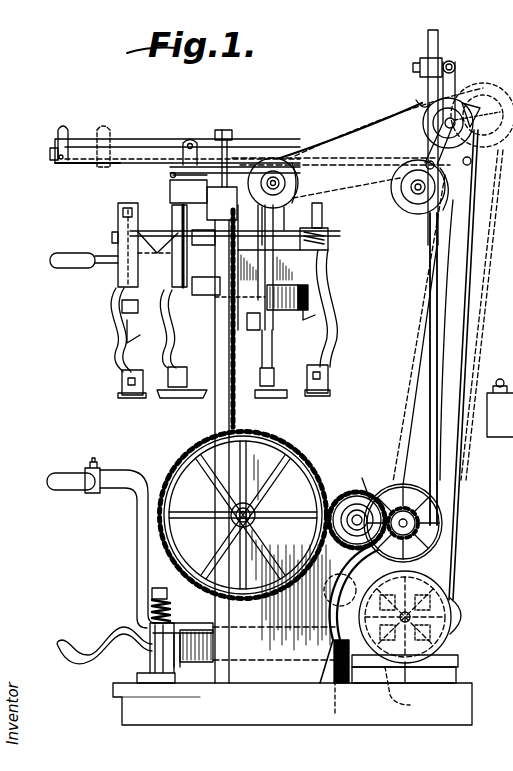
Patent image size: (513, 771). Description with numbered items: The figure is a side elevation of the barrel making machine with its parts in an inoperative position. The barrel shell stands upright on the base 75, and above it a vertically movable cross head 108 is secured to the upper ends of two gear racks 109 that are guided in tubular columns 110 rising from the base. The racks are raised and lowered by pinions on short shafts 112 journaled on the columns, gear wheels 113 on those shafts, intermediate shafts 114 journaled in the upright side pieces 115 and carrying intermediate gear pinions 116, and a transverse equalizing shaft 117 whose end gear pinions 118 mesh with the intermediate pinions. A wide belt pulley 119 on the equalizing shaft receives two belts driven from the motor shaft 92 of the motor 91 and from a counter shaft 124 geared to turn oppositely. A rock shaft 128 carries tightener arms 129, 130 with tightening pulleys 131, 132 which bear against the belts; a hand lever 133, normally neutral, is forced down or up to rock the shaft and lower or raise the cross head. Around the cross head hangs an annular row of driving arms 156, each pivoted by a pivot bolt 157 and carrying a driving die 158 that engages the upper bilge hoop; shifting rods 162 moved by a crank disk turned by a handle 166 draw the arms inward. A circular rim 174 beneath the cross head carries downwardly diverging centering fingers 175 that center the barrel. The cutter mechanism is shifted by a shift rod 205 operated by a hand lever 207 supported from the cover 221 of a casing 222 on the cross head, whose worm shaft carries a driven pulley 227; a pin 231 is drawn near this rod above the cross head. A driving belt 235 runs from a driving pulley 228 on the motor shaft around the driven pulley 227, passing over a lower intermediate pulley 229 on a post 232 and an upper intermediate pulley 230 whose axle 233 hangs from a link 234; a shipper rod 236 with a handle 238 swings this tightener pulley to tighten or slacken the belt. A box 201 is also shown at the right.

The base 75 is at (292, 704).
The motor 91 is at (452, 627).
The motor shaft 92 is at (407, 670).
The cross head 108 is at (330, 247).
The gear racks 109 is at (228, 355).
The tubular columns 110 is at (255, 515).
The short shafts 112 is at (258, 510).
The gear wheels 113 is at (315, 470).
The intermediate shafts 114 is at (372, 483).
The side pieces 115 is at (243, 515).
The intermediate gear pinions 116 is at (340, 492).
The equalizing shaft 117 is at (435, 523).
The gear pinions 118 is at (445, 512).
The wide belt pulley 119 is at (457, 480).
The counter shaft 124 is at (380, 678).
The rock shaft 128 is at (404, 694).
The tightener arm 129 is at (450, 652).
The tightener arm 130 is at (318, 673).
The tightening pulley 131 is at (462, 608).
The tightening pulley 132 is at (330, 595).
The hand lever 133 is at (135, 512).
The driving arms 156 is at (108, 333).
The pivot bolt 157 is at (324, 214).
The driving die 158 is at (133, 398).
The shifting rod 162 is at (152, 238).
The handle 166 is at (70, 263).
The circular rim 174 is at (215, 267).
The centering fingers 175 is at (287, 364).
The box 201 is at (500, 408).
The shift rod 205 is at (224, 130).
The hand lever 207 is at (150, 150).
The cover 221 is at (168, 175).
The casing 222 is at (170, 190).
The driven pulley 227 is at (285, 171).
The lower intermediate pulley 229 is at (413, 205).
The upper intermediate pulley 230 is at (428, 118).
The pin 231 is at (229, 158).
The post 232 is at (420, 368).
The axle 233 is at (462, 108).
The link 234 is at (455, 75).
The driving belt 235 is at (450, 240).
The shipper rod 236 is at (85, 165).
The handle 238 is at (56, 140).
The driving pulley 228 is at (321, 691).